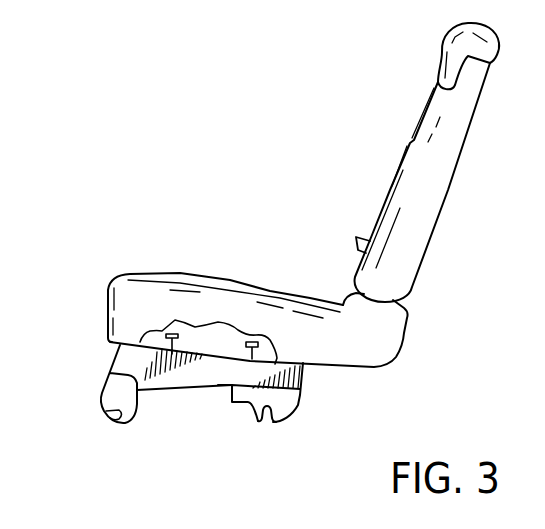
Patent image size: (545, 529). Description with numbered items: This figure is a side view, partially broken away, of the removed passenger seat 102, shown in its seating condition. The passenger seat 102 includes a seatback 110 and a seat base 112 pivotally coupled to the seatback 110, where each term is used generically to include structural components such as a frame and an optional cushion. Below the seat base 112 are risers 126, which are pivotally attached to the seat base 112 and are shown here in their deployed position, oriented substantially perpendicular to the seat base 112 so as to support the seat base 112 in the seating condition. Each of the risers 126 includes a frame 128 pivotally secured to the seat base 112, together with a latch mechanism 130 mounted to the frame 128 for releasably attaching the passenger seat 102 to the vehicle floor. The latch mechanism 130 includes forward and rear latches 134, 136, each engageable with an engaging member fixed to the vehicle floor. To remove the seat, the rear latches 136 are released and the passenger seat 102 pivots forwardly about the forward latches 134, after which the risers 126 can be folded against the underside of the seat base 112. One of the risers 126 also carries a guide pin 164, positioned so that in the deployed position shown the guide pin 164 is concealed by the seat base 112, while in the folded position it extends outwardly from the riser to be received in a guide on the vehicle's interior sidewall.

The passenger seat 102 is at (272, 155).
The seatback 110 is at (430, 190).
The seat base 112 is at (232, 298).
The risers 126 is at (198, 379).
The frame 128 is at (183, 383).
The latch mechanism 130 is at (256, 437).
The forward latches 134 is at (101, 397).
The rear latches 136 is at (298, 408).
The guide pin 164 is at (172, 333).